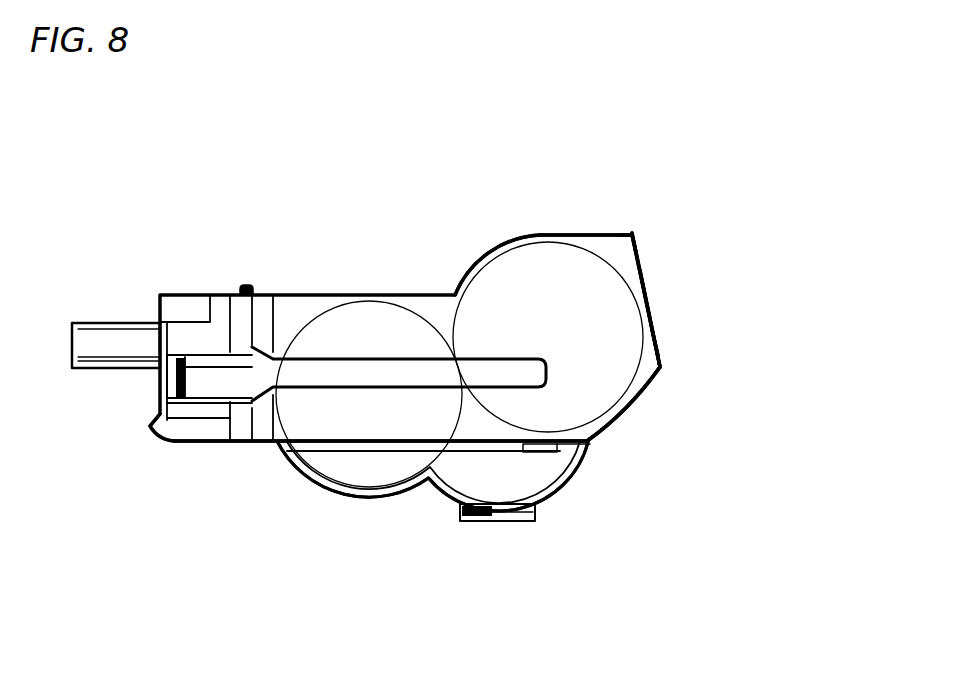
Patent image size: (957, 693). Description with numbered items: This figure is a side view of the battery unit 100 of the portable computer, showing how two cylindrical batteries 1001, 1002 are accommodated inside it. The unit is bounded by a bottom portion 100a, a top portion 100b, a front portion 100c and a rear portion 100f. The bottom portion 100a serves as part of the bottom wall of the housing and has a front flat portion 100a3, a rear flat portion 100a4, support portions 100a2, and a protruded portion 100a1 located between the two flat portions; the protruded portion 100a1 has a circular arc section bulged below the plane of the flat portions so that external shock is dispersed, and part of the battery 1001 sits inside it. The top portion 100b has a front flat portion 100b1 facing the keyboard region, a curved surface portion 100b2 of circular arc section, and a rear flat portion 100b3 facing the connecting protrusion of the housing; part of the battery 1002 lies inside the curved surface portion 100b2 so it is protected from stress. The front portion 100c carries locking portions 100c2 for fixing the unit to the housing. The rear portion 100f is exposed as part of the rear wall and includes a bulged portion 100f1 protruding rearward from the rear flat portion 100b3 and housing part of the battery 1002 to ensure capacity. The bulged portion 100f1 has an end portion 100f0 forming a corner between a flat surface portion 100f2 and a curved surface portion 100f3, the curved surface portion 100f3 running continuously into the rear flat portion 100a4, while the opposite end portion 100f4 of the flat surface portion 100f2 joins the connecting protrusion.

The battery unit 100 is at (341, 143).
The bottom portion 100a is at (272, 444).
The protruded portion 100a1 is at (333, 493).
The support portions 100a2 is at (438, 480).
The front flat portion 100a3 is at (217, 442).
The rear flat portion 100a4 is at (535, 513).
The top portion 100b is at (205, 295).
The front flat portion 100b1 is at (305, 295).
The curved surface portion 100b2 is at (485, 256).
The rear flat portion 100b3 is at (575, 235).
The front portion 100c is at (152, 420).
The locking portions 100c2 is at (132, 340).
The rear portion 100f is at (656, 333).
The end portion 100f0 is at (662, 370).
The bulged portion 100f1 is at (656, 345).
The flat surface portion 100f2 is at (660, 320).
The curved surface portion 100f3 is at (640, 388).
The end portion 100f4 is at (637, 233).
The battery 1001 is at (363, 325).
The battery 1002 is at (535, 285).